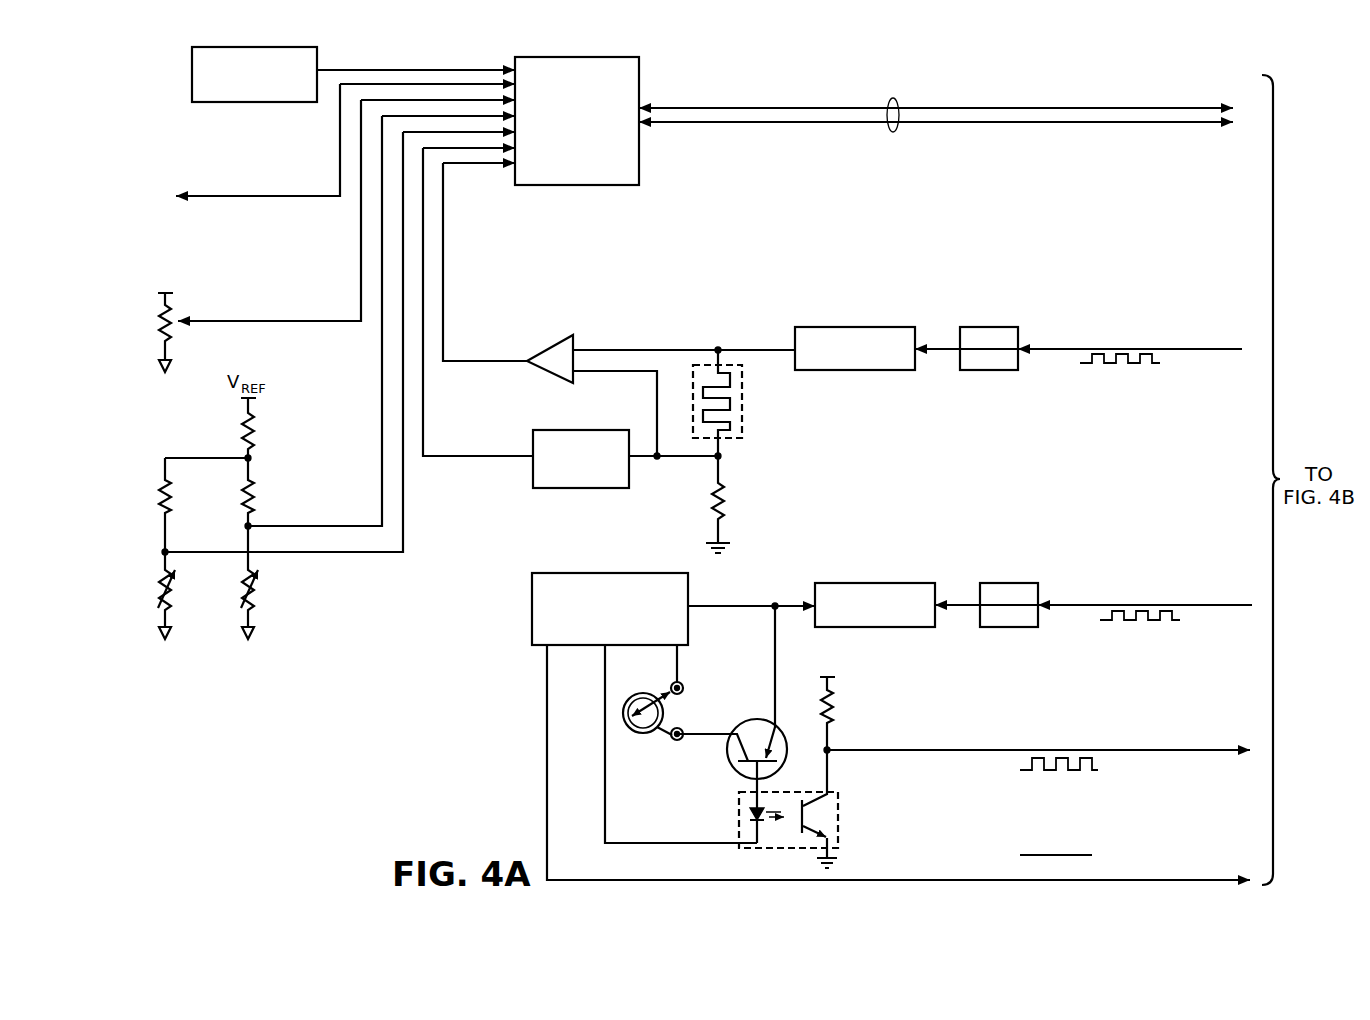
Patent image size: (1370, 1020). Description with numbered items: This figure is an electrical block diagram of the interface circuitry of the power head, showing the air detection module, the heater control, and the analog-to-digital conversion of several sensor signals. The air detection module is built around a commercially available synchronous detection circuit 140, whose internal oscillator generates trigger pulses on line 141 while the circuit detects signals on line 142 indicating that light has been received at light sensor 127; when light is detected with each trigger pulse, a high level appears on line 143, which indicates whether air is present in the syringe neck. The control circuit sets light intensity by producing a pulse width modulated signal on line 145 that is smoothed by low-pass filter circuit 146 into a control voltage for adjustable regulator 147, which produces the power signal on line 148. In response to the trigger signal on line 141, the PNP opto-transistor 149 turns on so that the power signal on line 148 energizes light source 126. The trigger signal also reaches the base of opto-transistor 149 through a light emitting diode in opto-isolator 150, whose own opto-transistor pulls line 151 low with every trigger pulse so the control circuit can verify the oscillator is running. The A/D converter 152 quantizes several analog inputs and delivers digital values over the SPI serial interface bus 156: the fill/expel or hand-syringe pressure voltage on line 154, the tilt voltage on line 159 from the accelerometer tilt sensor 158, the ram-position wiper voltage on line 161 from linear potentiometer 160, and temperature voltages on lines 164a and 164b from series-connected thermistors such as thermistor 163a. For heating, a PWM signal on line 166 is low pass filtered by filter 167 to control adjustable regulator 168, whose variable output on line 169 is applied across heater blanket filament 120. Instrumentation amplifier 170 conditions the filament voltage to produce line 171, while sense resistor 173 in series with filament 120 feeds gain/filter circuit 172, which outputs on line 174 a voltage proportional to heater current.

The tilt sensor 158 is at (235, 103).
The line 159 is at (433, 69).
The line 154 is at (235, 197).
The line 161 is at (250, 322).
The line 164b is at (382, 402).
The line 164a is at (403, 553).
The line 174 is at (424, 408).
The line 171 is at (444, 230).
The analog-to-digital converter 152 is at (563, 168).
The SPI serial interface bus 156 is at (897, 100).
The linear potentiometer 160 is at (160, 325).
The thermistor 163a is at (158, 583).
The instrumentation amplifier 170 is at (574, 337).
The line 169 is at (680, 350).
The heater blanket filament 120 is at (742, 412).
The gain/filter circuit 172 is at (565, 430).
The sense resistor 173 is at (730, 505).
The adjustable regulator 168 is at (840, 327).
The low pass filter 167 is at (985, 327).
The line 166 is at (1185, 349).
The synchronous detection circuit 140 is at (532, 612).
The line 148 is at (718, 606).
The adjustable regulator 147 is at (855, 583).
The low-pass filter circuit 146 is at (1000, 583).
The line 145 is at (1200, 606).
The PNP opto-transistor 149 is at (746, 722).
The line 142 is at (680, 665).
The light sensor 127 is at (684, 688).
The light source 126 is at (678, 741).
The line 141 is at (607, 785).
The opto-isolator 150 is at (838, 805).
The line 151 is at (1143, 750).
The line 143 is at (547, 774).